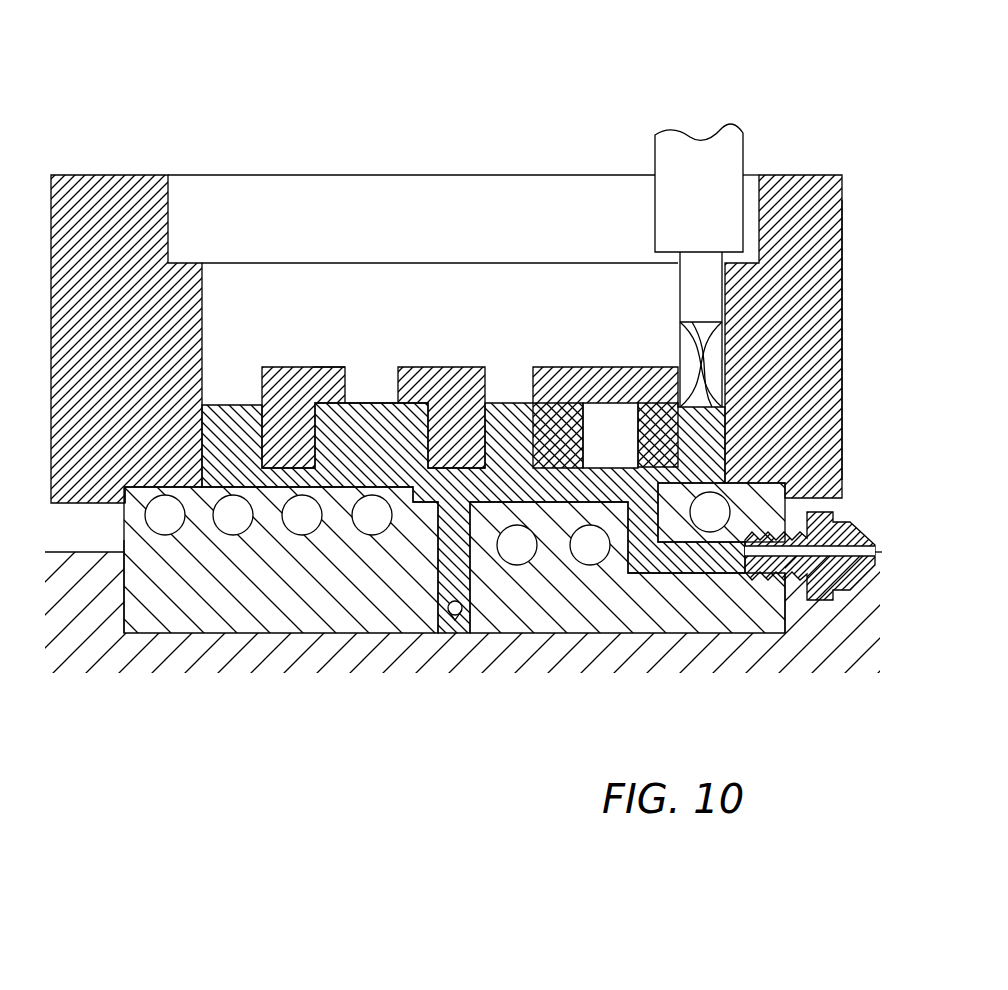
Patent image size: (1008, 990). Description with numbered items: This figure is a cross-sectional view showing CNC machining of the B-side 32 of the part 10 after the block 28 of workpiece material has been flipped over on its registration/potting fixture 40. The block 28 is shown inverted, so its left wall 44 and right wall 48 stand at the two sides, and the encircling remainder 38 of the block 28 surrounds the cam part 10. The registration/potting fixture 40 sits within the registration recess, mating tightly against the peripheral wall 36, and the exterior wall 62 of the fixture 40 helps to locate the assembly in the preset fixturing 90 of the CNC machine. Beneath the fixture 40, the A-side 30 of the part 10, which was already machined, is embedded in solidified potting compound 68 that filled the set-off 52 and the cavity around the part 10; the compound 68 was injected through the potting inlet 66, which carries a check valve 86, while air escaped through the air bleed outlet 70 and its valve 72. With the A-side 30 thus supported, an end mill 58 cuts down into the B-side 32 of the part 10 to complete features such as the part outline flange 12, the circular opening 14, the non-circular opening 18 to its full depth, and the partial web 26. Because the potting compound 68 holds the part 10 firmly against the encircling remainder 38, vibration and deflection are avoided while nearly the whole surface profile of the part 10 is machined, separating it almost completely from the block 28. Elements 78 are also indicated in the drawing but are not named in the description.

The part 10 is at (305, 350).
The part outline flange 12 is at (655, 428).
The circular opening 14 is at (507, 390).
The non-circular opening 18 is at (378, 390).
The partial web 26 is at (338, 372).
The block 28 is at (89, 159).
The A-side 30 is at (221, 697).
The B-side 32 is at (480, 302).
The peripheral wall 36 is at (127, 502).
The encircling remainder 38 is at (788, 282).
The registration/potting fixture 40 is at (236, 650).
The left wall 44 is at (843, 275).
The right wall 48 is at (52, 190).
The set-off 52 is at (725, 478).
The end mill 58 is at (668, 162).
The exterior wall 62 is at (128, 622).
The potting inlet 66 is at (455, 636).
The potting compound 68 is at (470, 570).
The air bleed outlet 70 is at (788, 580).
The valve 72 is at (855, 583).
The holes 78 is at (302, 537).
The check valve 86 is at (465, 612).
The fixturing 90 is at (112, 602).